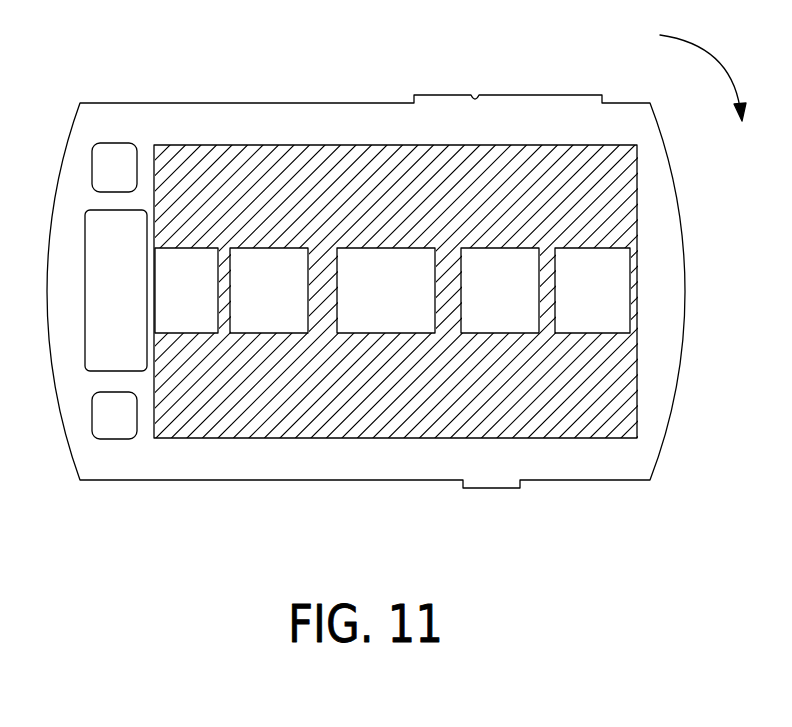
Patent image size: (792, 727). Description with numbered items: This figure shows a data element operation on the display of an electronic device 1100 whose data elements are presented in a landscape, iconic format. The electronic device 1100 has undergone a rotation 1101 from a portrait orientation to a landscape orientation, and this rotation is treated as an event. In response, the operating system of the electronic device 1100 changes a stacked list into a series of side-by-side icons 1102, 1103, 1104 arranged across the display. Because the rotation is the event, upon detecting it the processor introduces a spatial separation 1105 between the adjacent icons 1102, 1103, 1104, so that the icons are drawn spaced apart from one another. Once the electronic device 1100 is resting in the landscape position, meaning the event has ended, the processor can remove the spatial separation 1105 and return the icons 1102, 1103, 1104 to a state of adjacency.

The electronic device 1100 is at (207, 102).
The rotation 1101 is at (717, 53).
The icon 1102 is at (273, 318).
The icon 1103 is at (385, 313).
The icon 1104 is at (500, 313).
The spatial separation 1105 is at (637, 383).